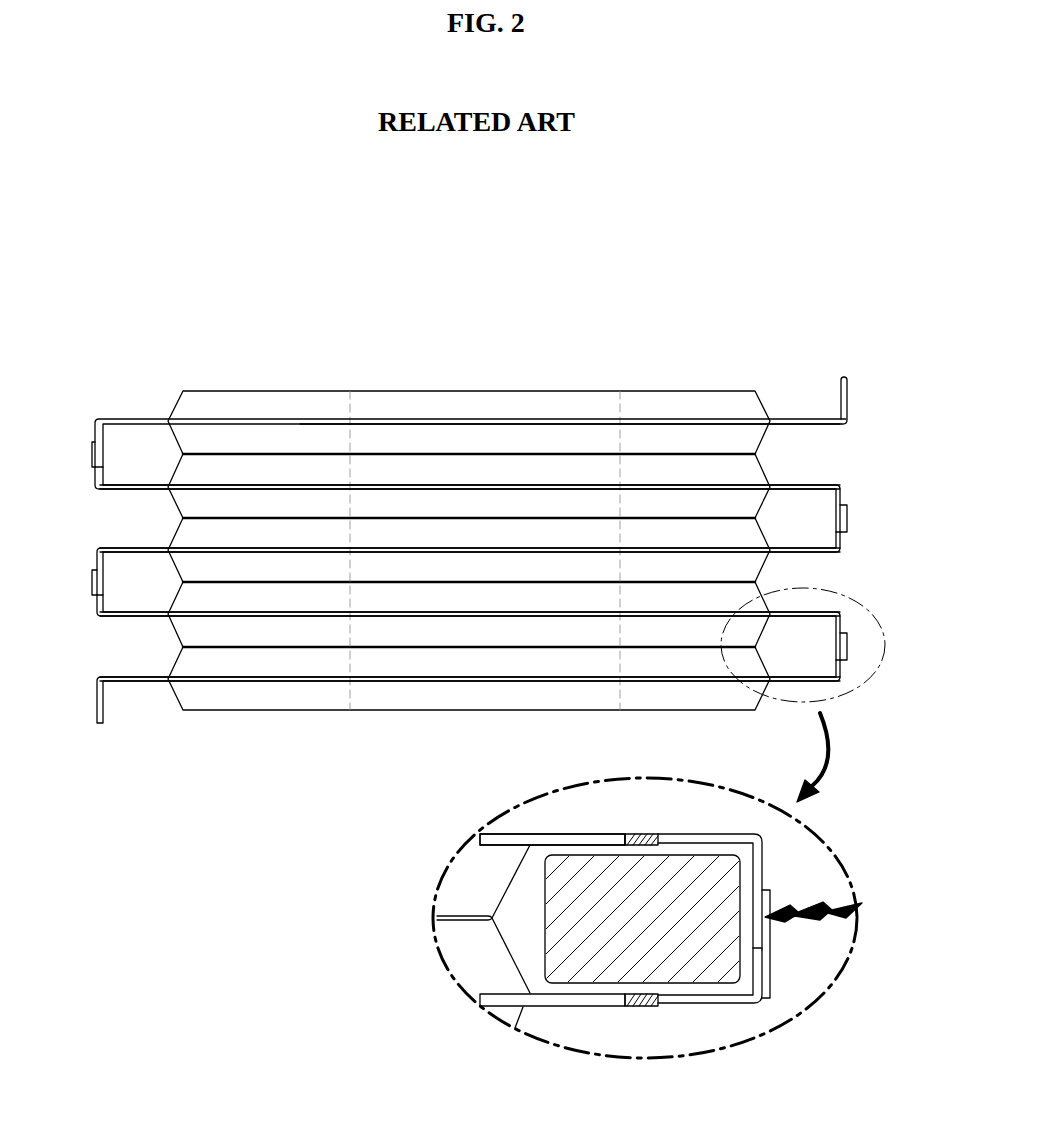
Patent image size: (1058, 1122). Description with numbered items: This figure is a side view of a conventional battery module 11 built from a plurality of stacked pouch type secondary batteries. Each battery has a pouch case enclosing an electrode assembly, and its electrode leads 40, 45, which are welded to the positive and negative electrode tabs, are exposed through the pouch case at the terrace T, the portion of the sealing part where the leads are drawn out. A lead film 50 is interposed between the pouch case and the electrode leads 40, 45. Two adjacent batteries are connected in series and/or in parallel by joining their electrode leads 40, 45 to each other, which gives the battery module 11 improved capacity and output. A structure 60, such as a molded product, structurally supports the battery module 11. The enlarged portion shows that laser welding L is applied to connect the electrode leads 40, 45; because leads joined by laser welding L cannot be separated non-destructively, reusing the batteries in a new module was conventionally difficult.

The battery module 11 is at (579, 250).
The electrode lead 40 is at (847, 393).
The electrode lead 45 is at (121, 419).
The lead film 50 is at (640, 834).
The structure 60 is at (598, 985).
The terrace T is at (578, 834).
The laser welding L is at (862, 909).